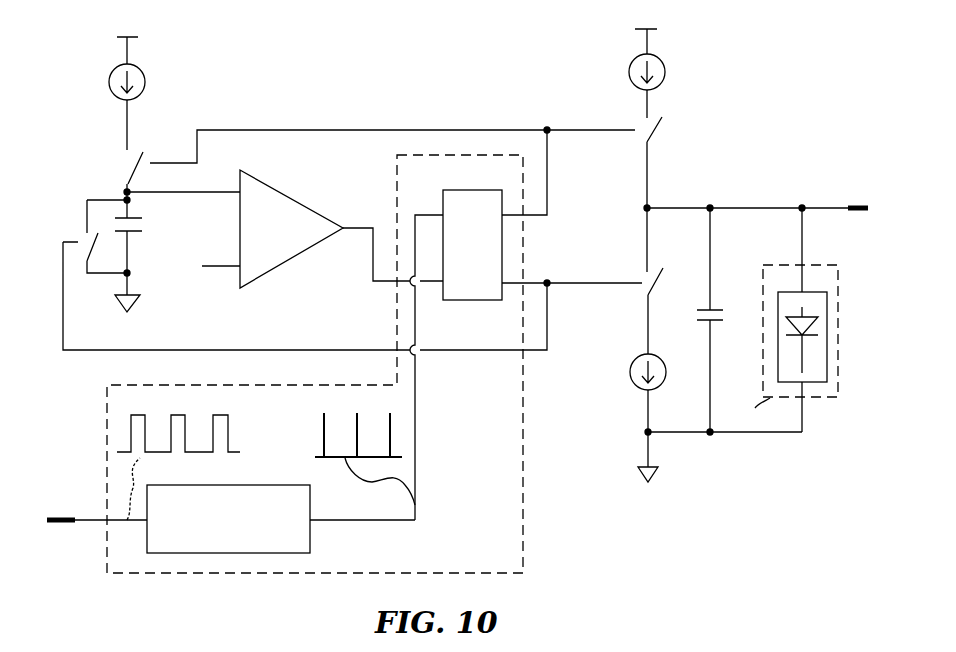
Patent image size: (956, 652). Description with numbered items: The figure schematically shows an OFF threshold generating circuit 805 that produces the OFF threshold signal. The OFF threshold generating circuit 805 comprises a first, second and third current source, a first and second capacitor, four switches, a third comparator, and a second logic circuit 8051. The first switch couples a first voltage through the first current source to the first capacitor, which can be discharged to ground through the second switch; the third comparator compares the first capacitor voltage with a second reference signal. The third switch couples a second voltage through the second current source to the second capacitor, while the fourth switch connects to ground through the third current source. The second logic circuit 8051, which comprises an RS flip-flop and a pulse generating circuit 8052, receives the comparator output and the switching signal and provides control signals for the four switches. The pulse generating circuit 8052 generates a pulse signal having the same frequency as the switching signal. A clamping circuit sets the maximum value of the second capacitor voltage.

The OFF threshold generating circuit 805 is at (752, 112).
The second logic circuit 8051 is at (523, 515).
The pulse generating circuit 8052 is at (250, 485).